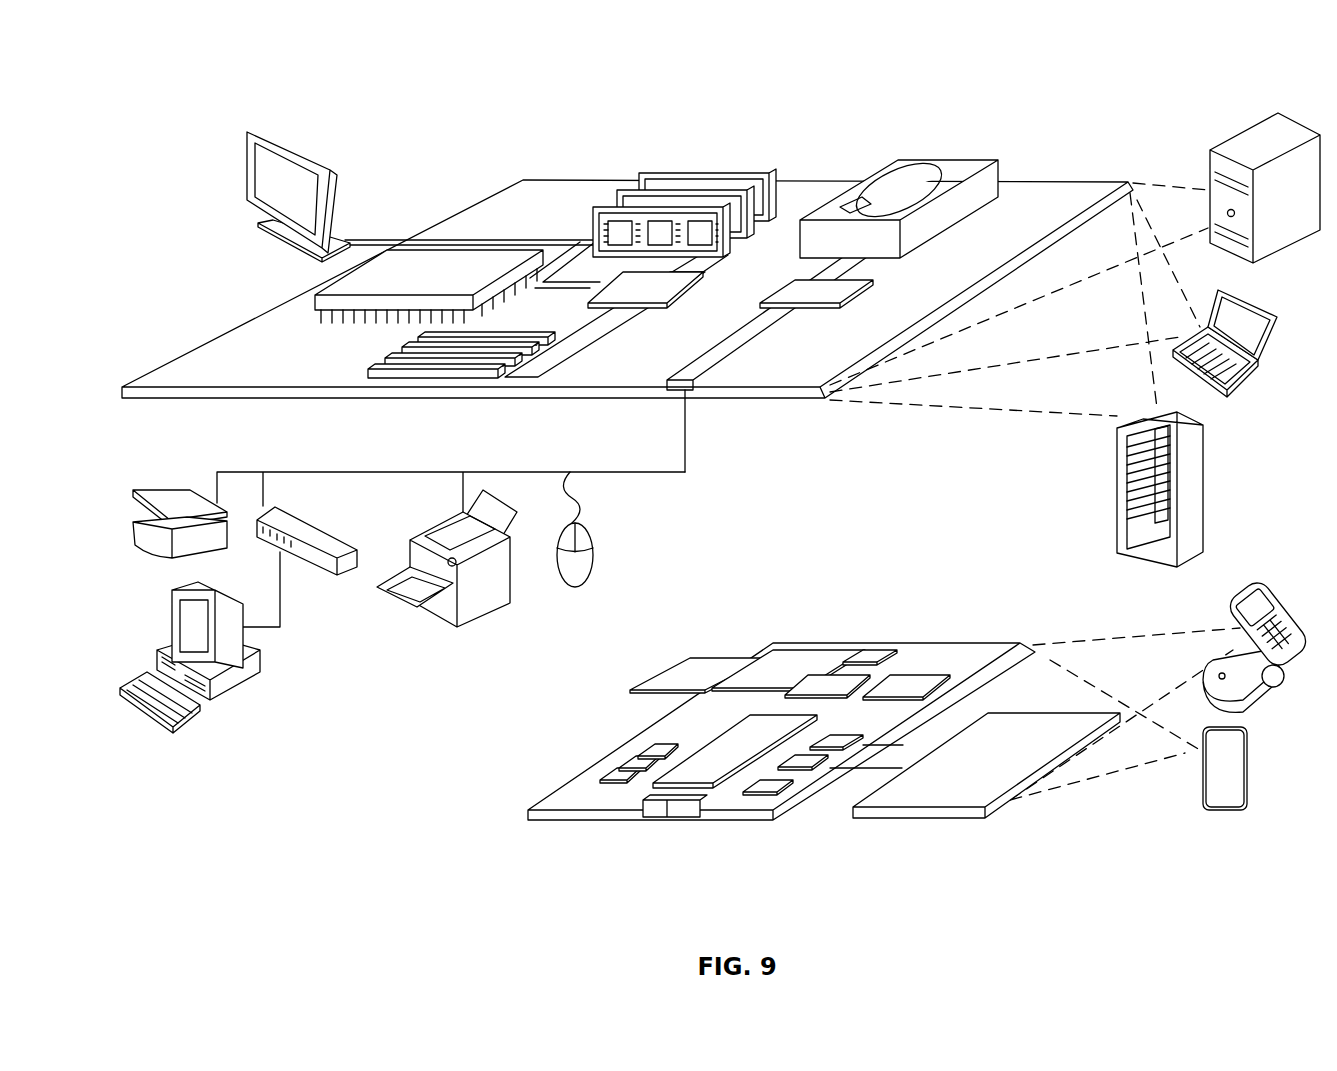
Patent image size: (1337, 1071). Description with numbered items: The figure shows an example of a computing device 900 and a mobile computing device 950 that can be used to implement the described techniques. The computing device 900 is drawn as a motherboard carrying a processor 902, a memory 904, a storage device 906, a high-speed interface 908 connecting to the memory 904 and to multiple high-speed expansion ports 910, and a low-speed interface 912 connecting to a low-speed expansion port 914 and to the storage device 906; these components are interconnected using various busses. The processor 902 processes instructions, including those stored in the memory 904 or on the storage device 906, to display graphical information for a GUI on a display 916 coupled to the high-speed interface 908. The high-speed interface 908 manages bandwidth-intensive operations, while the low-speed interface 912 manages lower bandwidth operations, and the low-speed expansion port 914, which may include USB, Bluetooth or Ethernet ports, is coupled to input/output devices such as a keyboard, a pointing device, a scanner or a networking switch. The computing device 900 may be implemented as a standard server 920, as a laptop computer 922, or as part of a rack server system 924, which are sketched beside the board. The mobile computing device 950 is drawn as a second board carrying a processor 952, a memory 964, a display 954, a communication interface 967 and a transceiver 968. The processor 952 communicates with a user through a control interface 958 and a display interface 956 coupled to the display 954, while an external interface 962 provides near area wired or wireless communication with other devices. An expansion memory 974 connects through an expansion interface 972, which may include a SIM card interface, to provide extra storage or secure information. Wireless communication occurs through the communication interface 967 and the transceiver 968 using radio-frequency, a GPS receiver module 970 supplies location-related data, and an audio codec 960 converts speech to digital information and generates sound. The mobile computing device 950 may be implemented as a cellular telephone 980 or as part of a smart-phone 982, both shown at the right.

The computing device 900 is at (204, 84).
The processor 902 is at (322, 300).
The memory 904 is at (667, 172).
The storage device 906 is at (905, 160).
The high-speed interface 908 is at (627, 285).
The high-speed expansion ports 910 is at (385, 358).
The low-speed interface 912 is at (827, 288).
The low-speed expansion port 914 is at (690, 393).
The display 916 is at (258, 125).
The standard server 920 is at (1240, 126).
The laptop computer 922 is at (1275, 313).
The rack server system 924 is at (1206, 490).
The mobile computing device 950 is at (505, 812).
The processor 952 is at (703, 780).
The display 954 is at (948, 790).
The display interface 956 is at (770, 793).
The control interface 958 is at (808, 768).
The audio codec 960 is at (848, 742).
The external interface 962 is at (667, 818).
The memory 964 is at (620, 760).
The communication interface 967 is at (823, 676).
The transceiver 968 is at (910, 688).
The GPS receiver module 970 is at (885, 655).
The expansion interface 972 is at (757, 653).
The expansion memory 974 is at (680, 660).
The cellular telephone 980 is at (1278, 598).
The smart-phone 982 is at (1228, 803).